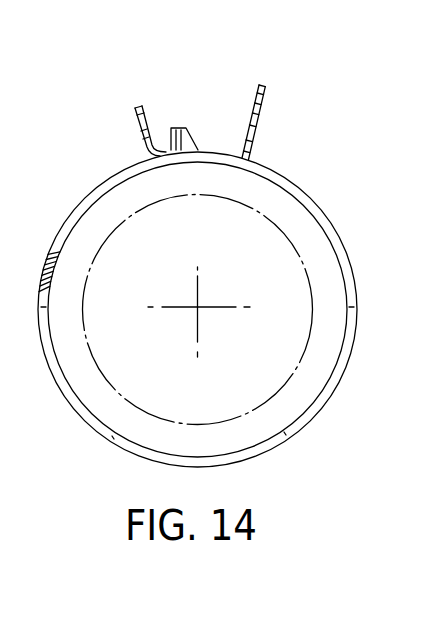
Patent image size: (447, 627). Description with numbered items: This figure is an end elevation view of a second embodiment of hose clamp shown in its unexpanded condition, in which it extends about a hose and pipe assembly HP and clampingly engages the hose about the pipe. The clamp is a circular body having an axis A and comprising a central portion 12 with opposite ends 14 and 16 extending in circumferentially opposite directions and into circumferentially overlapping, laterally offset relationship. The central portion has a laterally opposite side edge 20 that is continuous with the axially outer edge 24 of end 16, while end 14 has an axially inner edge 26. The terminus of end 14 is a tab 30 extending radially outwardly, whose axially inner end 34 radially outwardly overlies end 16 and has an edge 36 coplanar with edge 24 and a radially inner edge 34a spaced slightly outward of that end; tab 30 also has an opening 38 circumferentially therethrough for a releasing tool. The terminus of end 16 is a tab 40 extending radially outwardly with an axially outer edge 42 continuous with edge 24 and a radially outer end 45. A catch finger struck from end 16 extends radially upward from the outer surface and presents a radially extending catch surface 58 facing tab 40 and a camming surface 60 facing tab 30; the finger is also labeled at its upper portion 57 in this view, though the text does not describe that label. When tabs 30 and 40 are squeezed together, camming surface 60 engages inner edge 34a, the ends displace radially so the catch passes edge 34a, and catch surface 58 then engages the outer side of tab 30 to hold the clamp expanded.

The central portion 12 is at (128, 453).
The end 14 is at (95, 182).
The end 16 is at (315, 199).
The side edge 20 is at (239, 459).
The axially outer edge 24 is at (328, 219).
The axially inner edge 26 is at (118, 173).
The tab 30 is at (266, 84).
The axially inner end 34 is at (258, 137).
The radially inner edge 34a is at (246, 157).
The edge 36 is at (265, 112).
The opening 38 is at (272, 100).
The tab 40 is at (130, 106).
The axially outer edge 42 is at (138, 131).
The radially outer end 45 is at (137, 108).
The stop tip 57 is at (178, 127).
The catch surface 58 is at (171, 140).
The camming surface 60 is at (187, 133).
The axis A is at (197, 307).
The hose and pipe assembly HP is at (305, 259).